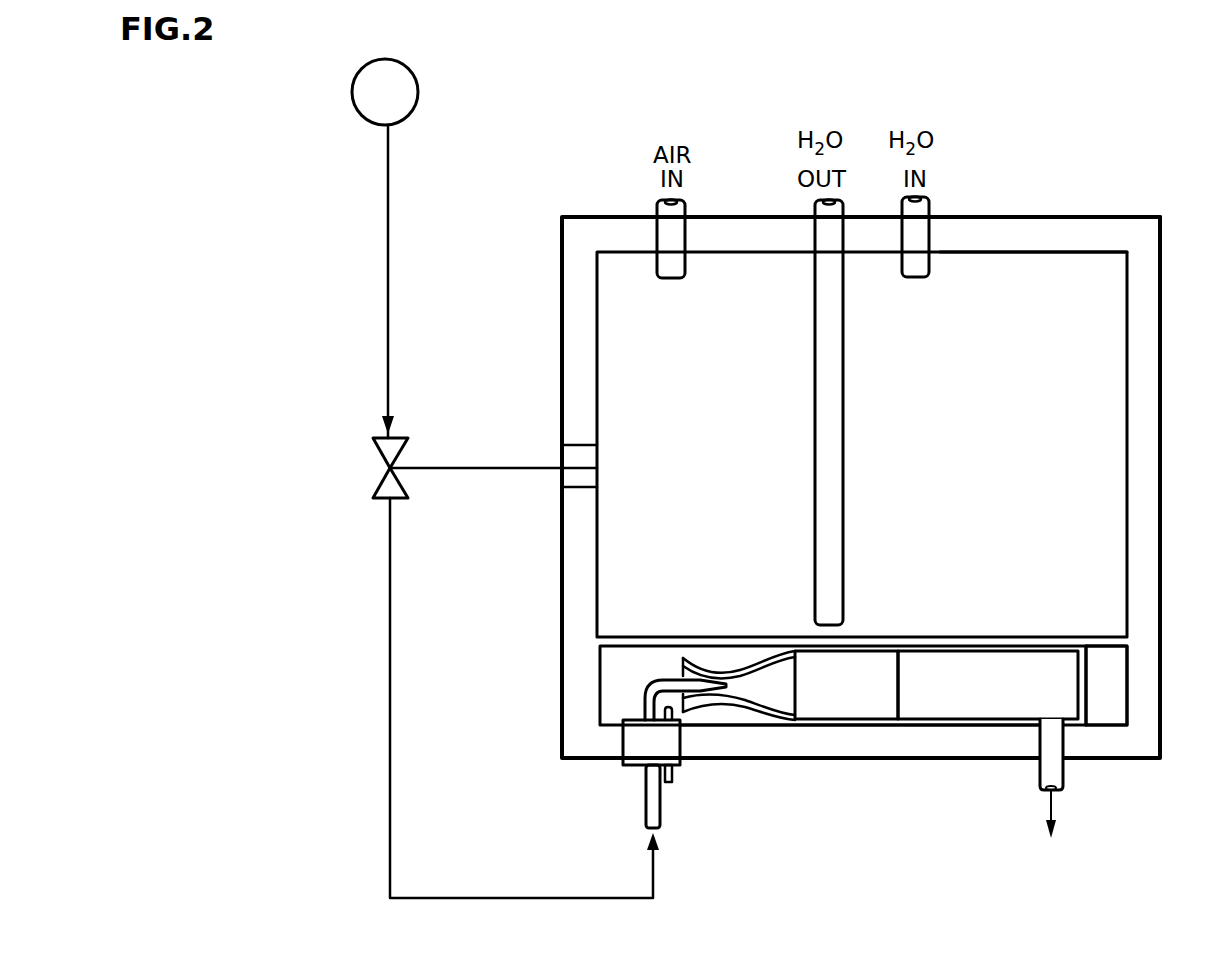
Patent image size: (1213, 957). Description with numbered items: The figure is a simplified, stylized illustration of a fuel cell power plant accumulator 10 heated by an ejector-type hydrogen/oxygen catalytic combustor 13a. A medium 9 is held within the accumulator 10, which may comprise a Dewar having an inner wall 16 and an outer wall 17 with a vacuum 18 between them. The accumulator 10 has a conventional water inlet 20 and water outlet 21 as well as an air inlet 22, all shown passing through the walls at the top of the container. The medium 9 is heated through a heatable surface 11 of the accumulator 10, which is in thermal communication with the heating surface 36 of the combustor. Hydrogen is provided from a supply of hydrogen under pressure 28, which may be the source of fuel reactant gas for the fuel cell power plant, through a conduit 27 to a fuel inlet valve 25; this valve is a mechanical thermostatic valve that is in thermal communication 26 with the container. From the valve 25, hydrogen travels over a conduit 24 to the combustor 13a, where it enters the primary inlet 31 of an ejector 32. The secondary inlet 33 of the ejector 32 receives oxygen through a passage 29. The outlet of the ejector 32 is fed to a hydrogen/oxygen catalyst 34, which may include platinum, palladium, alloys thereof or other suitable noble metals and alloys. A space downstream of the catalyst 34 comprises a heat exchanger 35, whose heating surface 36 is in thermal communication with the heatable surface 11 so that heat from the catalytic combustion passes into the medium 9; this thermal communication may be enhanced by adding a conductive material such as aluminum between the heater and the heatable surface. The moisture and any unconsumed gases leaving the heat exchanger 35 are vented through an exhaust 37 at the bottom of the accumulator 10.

The medium 9 is at (1013, 426).
The fuel cell power plant accumulator 10 is at (883, 432).
The heatable surface 11 is at (946, 640).
The combustor 13a is at (952, 740).
The inner wall 16 is at (1032, 256).
The outer wall 17 is at (1032, 215).
The vacuum 18 is at (976, 224).
The water inlet 20 is at (918, 199).
The water outlet 21 is at (828, 200).
The air inlet 22 is at (680, 200).
The conduit 24 is at (585, 896).
The fuel inlet valve 25 is at (380, 468).
The thermal communication 26 is at (556, 462).
The conduit 27 is at (384, 230).
The supply of hydrogen under pressure 28 is at (364, 68).
The passage 29 is at (672, 782).
The primary inlet 31 is at (720, 702).
The ejector 32 is at (758, 660).
The secondary inlet 33 is at (680, 674).
The hydrogen/oxygen catalyst 34 is at (838, 722).
The heat exchanger 35 is at (978, 722).
The heating surface 36 is at (1012, 652).
The exhaust 37 is at (1064, 775).